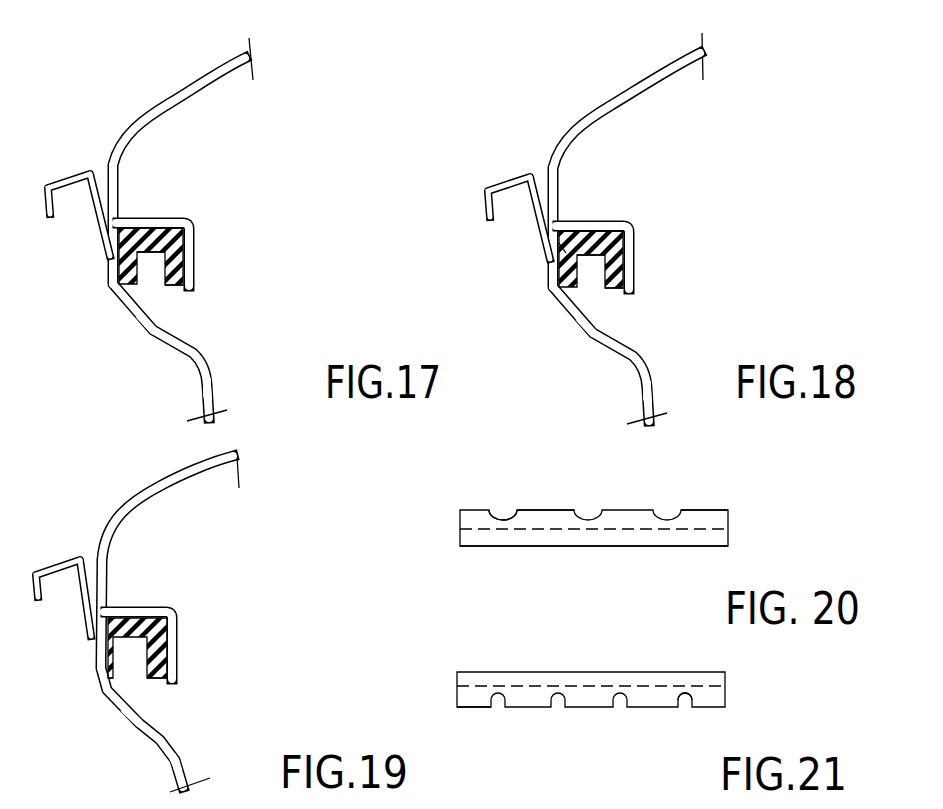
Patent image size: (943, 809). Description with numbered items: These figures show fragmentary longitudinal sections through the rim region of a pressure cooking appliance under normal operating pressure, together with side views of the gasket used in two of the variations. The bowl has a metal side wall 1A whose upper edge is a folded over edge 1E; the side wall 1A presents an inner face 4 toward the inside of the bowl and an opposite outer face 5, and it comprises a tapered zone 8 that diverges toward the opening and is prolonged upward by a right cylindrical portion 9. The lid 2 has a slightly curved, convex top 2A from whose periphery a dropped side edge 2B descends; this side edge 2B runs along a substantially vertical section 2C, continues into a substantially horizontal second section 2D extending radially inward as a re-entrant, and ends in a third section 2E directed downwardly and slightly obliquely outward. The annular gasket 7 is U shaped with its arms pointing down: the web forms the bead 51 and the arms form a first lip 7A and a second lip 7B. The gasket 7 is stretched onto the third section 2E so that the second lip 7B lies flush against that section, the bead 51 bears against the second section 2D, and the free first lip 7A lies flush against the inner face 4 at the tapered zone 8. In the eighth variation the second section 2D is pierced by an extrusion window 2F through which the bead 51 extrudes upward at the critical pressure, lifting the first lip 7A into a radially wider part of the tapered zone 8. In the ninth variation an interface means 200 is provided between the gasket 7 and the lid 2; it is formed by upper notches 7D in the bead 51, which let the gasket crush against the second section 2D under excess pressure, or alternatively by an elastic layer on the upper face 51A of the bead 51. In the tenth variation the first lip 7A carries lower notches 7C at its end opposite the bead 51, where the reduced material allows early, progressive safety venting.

In FIG. 17, the side wall 1A is at (201, 357).
In FIG. 18, the side wall 1A is at (623, 354).
In FIG. 19, the side wall 1A is at (147, 722).
In FIG. 17, the folded over edge 1E is at (46, 192).
In FIG. 18, the folded over edge 1E is at (486, 195).
In FIG. 19, the folded over edge 1E is at (28, 582).
In FIG. 17, the lid 2 is at (144, 97).
In FIG. 18, the lid 2 is at (591, 101).
In FIG. 19, the lid 2 is at (121, 500).
In FIG. 17, the top 2A is at (218, 63).
In FIG. 18, the top 2A is at (668, 62).
In FIG. 19, the top 2A is at (195, 462).
In FIG. 17, the dropped side edge 2B is at (129, 166).
In FIG. 18, the dropped side edge 2B is at (577, 176).
In FIG. 19, the dropped side edge 2B is at (121, 560).
In FIG. 17, the substantially vertical section 2C is at (120, 190).
In FIG. 18, the substantially vertical section 2C is at (561, 200).
In FIG. 19, the substantially vertical section 2C is at (108, 583).
In FIG. 17, the second horizontal section 2D is at (188, 216).
In FIG. 18, the second horizontal section 2D is at (607, 221).
In FIG. 19, the second horizontal section 2D is at (140, 606).
In FIG. 17, the third section 2E is at (191, 268).
In FIG. 18, the third section 2E is at (632, 268).
In FIG. 19, the third section 2E is at (178, 640).
In FIG. 17, the extrusion window 2F is at (151, 217).
In FIG. 17, the inner face 4 is at (217, 390).
In FIG. 18, the inner face 4 is at (653, 403).
In FIG. 19, the inner face 4 is at (183, 758).
In FIG. 17, the outer face 5 is at (200, 390).
In FIG. 18, the outer face 5 is at (639, 402).
In FIG. 19, the outer face 5 is at (171, 768).
In FIG. 20, the annular gasket 7 is at (452, 528).
In FIG. 17, the first lip 7A is at (108, 268).
In FIG. 18, the first lip 7A is at (552, 286).
In FIG. 19, the first lip 7A is at (87, 634).
In FIG. 20, the first lip 7A is at (697, 538).
In FIG. 21, the first lip 7A is at (533, 708).
In FIG. 17, the second lip 7B is at (177, 290).
In FIG. 18, the second lip 7B is at (611, 296).
In FIG. 19, the second lip 7B is at (178, 652).
In FIG. 19, the lower notch 7C is at (99, 675).
In FIG. 21, the lower notch 7C is at (685, 712).
In FIG. 18, the upper notch 7D is at (562, 262).
In FIG. 20, the upper notch 7D is at (503, 506).
In FIG. 17, the tapered zone 8 is at (148, 330).
In FIG. 18, the tapered zone 8 is at (588, 333).
In FIG. 19, the tapered zone 8 is at (133, 723).
In FIG. 17, the right cylindrical portion 9 is at (99, 228).
In FIG. 18, the right cylindrical portion 9 is at (540, 224).
In FIG. 19, the right cylindrical portion 9 is at (83, 612).
In FIG. 17, the bead 51 is at (191, 242).
In FIG. 18, the bead 51 is at (632, 240).
In FIG. 20, the bead 51 is at (716, 519).
In FIG. 21, the bead 51 is at (690, 676).
In FIG. 20, the upper face of the bead 51A is at (707, 500).
In FIG. 18, the interface means 200 is at (560, 242).
In FIG. 20, the interface means 200 is at (555, 502).